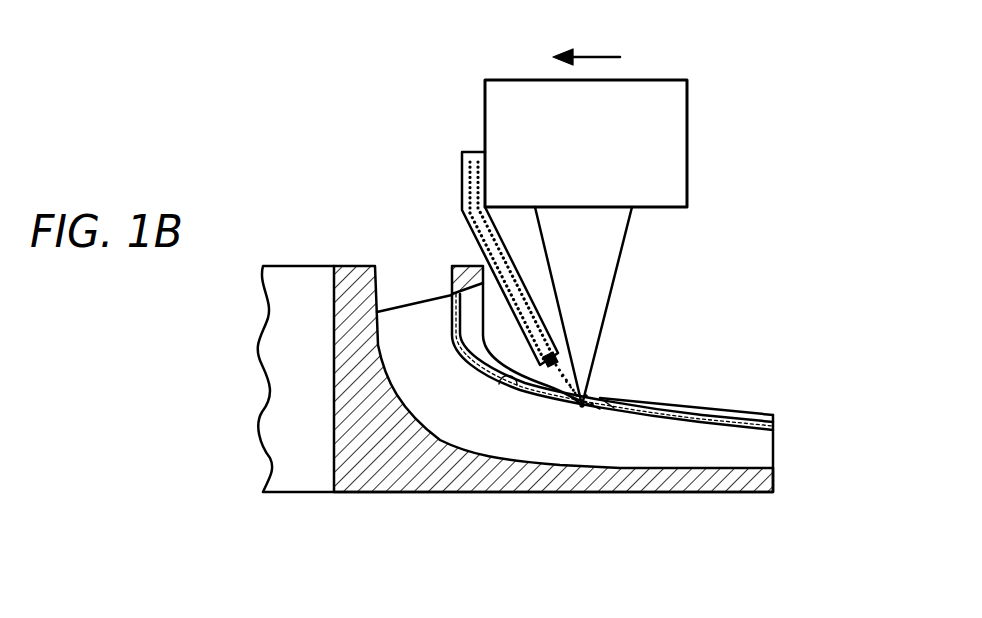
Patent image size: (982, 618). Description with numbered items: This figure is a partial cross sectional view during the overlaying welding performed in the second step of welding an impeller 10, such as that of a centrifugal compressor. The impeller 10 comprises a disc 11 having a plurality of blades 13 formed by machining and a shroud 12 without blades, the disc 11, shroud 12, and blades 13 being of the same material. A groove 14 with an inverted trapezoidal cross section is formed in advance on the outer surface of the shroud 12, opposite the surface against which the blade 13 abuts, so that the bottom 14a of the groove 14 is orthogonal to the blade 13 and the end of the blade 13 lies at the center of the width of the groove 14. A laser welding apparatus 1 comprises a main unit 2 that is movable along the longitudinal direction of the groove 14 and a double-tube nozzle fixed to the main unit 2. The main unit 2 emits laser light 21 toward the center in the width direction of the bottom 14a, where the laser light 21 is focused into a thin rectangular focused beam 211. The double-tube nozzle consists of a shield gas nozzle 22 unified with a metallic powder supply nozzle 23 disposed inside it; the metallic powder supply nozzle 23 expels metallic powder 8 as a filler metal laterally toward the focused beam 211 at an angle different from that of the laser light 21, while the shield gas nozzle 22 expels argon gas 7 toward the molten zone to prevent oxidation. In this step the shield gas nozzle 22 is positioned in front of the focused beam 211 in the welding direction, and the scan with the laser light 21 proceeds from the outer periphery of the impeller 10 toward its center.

The laser welding apparatus 1 is at (500, 50).
The main unit 2 is at (485, 103).
The laser light 21 is at (625, 239).
The focused beam 211 is at (588, 408).
The shield gas nozzle 22 is at (472, 151).
The metallic powder supply nozzle 23 is at (562, 358).
The argon gas 7 is at (602, 398).
The metallic powder 8 is at (584, 378).
The impeller 10 is at (288, 221).
The disc 11 is at (356, 266).
The shroud 12 is at (460, 265).
The blade 13 is at (410, 308).
The groove 14 is at (752, 418).
The bottom 14a is at (517, 385).